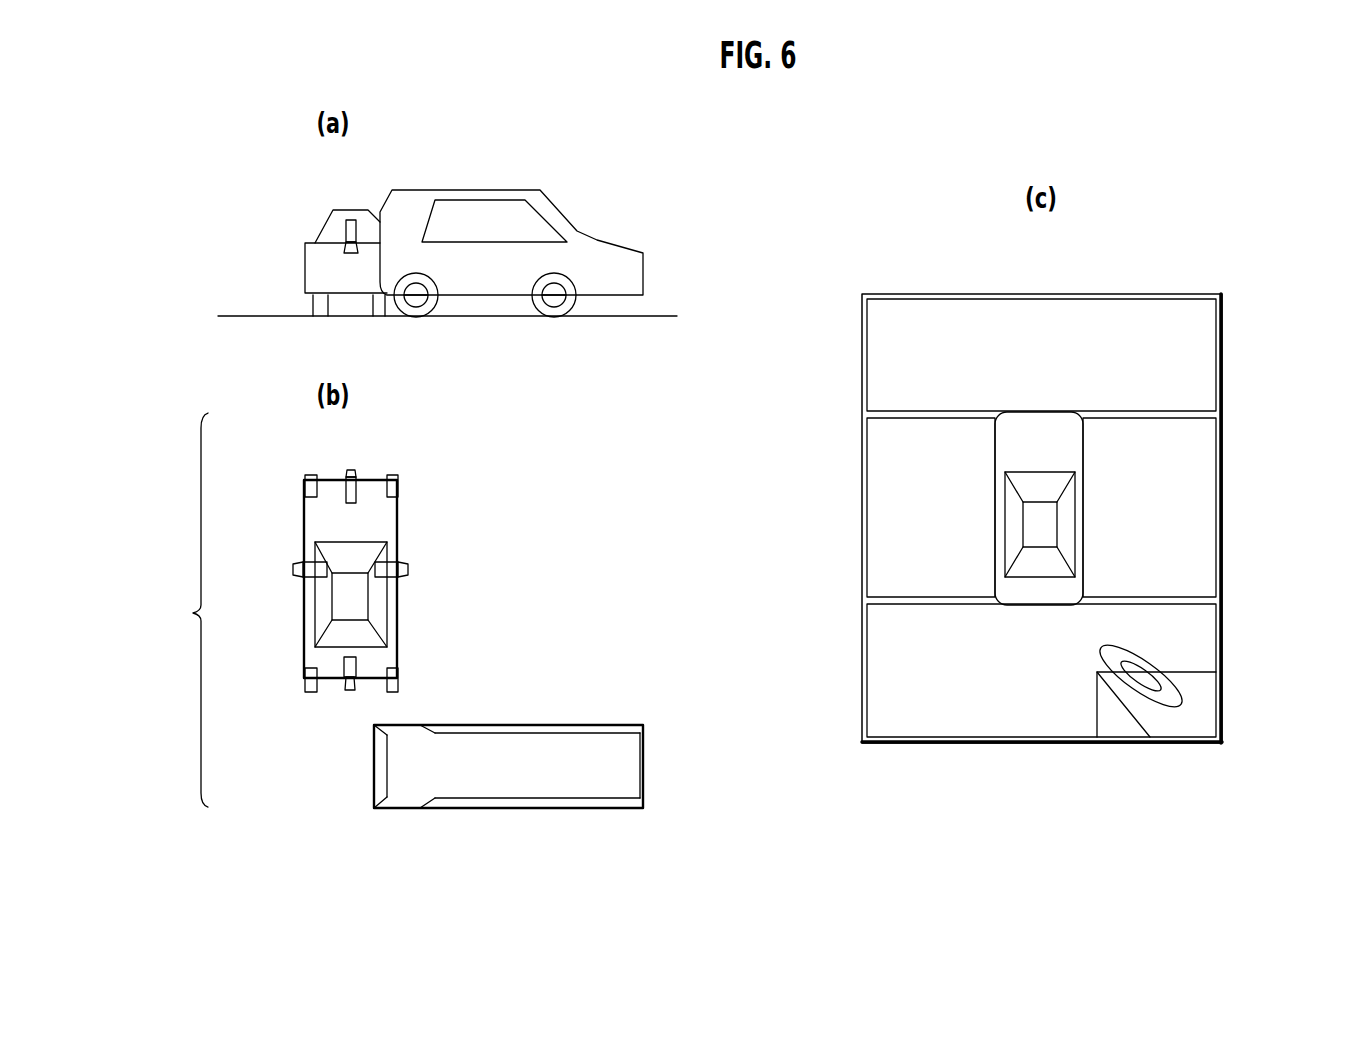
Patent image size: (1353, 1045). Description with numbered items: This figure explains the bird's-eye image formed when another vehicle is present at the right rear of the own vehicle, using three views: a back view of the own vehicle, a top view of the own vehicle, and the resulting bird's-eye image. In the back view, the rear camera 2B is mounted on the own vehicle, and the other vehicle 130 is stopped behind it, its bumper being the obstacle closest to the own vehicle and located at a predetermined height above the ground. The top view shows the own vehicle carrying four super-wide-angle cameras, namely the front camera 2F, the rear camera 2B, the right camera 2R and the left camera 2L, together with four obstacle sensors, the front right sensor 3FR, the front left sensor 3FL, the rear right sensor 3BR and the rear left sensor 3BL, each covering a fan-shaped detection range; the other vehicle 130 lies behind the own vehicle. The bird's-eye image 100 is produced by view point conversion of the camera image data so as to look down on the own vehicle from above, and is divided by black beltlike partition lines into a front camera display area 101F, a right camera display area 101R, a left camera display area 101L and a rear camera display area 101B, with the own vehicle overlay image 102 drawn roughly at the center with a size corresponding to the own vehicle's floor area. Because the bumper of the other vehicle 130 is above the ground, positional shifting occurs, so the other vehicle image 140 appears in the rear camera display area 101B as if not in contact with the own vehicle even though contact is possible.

The other vehicle 130 is at (497, 197).
The camera 2B is at (343, 225).
The camera 2F is at (353, 490).
The camera 2L is at (308, 570).
The camera 2R is at (397, 553).
The obstacle sensor 3FL is at (305, 483).
The obstacle sensor 3FR is at (400, 485).
The obstacle sensor 3BL is at (305, 675).
The obstacle sensor 3BR is at (400, 675).
The bird's-eye image 100 is at (1166, 288).
The front camera display area 101F is at (1207, 343).
The right camera display area 101R is at (1207, 450).
The left camera display area 101L is at (877, 562).
The rear camera display area 101B is at (1198, 620).
The own vehicle overlay image 102 is at (1082, 543).
The other vehicle image 140 is at (1208, 690).